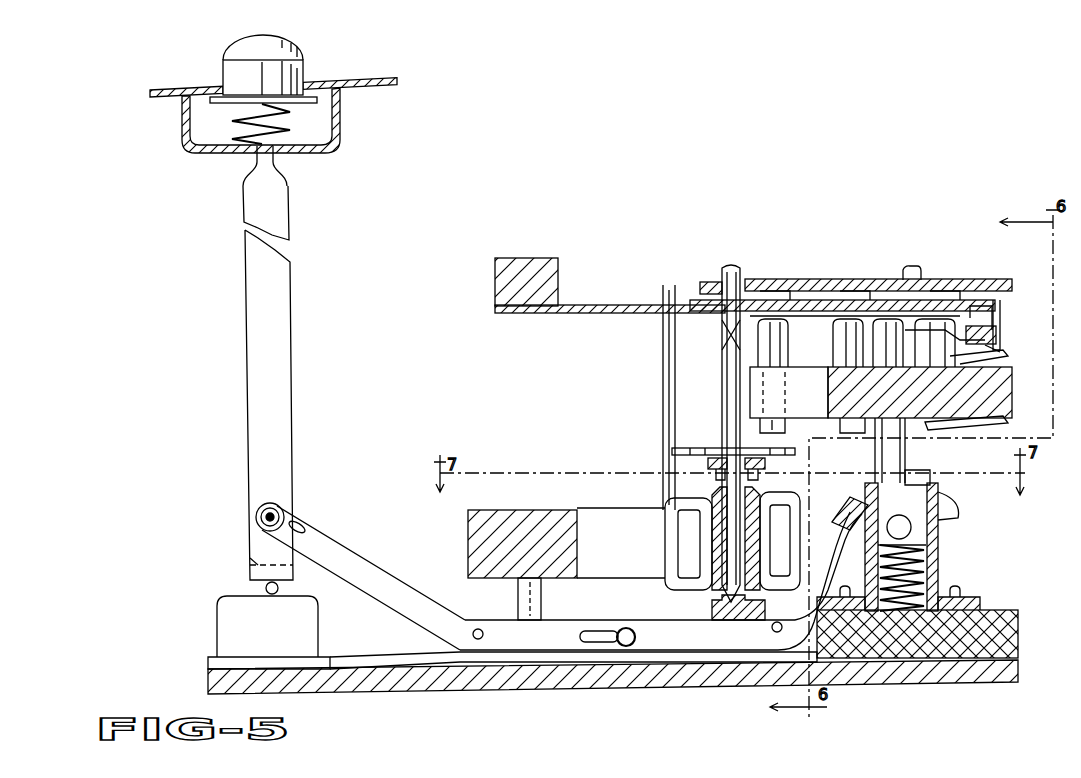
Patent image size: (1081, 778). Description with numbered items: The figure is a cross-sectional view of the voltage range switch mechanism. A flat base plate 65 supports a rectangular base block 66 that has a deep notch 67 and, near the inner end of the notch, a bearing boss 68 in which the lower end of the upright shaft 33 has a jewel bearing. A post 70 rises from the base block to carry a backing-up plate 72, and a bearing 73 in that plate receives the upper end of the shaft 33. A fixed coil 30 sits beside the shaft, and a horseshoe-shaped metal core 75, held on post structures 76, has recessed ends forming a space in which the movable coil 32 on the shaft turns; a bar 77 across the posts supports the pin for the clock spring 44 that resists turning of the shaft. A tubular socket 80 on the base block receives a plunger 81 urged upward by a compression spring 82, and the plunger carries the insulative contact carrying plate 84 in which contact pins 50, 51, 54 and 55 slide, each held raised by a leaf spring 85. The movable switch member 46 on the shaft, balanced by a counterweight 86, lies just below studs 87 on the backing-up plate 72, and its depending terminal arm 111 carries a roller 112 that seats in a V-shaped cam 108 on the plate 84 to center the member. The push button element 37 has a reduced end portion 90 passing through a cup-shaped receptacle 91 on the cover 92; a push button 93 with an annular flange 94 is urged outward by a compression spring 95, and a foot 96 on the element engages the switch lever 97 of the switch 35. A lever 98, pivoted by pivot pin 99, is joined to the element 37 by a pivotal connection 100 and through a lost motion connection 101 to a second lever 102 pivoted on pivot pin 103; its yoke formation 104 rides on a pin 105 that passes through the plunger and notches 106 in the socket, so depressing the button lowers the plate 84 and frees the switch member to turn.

The fixed coil 30 is at (700, 505).
The movable coil 32 is at (770, 496).
The shaft 33 is at (722, 365).
The switch 35 is at (219, 611).
The push button element 37 is at (250, 400).
The clock spring 44 is at (720, 451).
The movable switch member 46 is at (634, 305).
The contact pin 50 is at (1000, 342).
The contact pin 51 is at (1000, 356).
The contact pin 54 is at (856, 343).
The contact pin 55 is at (840, 346).
The base plate 65 is at (530, 688).
The base block 66 is at (1018, 640).
The notch 67 is at (460, 657).
The bearing boss 68 is at (710, 604).
The post 70 is at (890, 268).
The backing-up plate 72 is at (988, 280).
The bearing 73 is at (718, 283).
The metal core 75 is at (535, 512).
The post structure 76 is at (520, 604).
The bar 77 is at (762, 463).
The tubular socket 80 is at (875, 593).
The plunger 81 is at (880, 440).
The compression spring 82 is at (938, 575).
The contact carrying plate 84 is at (1012, 406).
The leaf spring 85 is at (985, 430).
The counterweight 86 is at (530, 258).
The stud 87 is at (800, 285).
The reduced end portion 90 is at (258, 152).
The cup-shaped receptacle 91 is at (190, 140).
The cover 92 is at (392, 88).
The push button 93 is at (240, 53).
The annular flange 94 is at (310, 93).
The compression spring 95 is at (252, 112).
The foot 96 is at (250, 566).
The switch lever 97 is at (280, 592).
The lever 98 is at (393, 600).
The pivot pin 99 is at (484, 634).
The pivotal connection 100 is at (287, 507).
The pivotal and lost motion connection 101 is at (626, 628).
The second lever 102 is at (822, 532).
The pivot pin 103 is at (772, 628).
The yoke formation 104 is at (958, 516).
The pin 105 is at (912, 532).
The notch 106 is at (932, 478).
The V-shaped cam 108 is at (1005, 359).
The terminal arm 111 is at (996, 314).
The roller 112 is at (1000, 330).